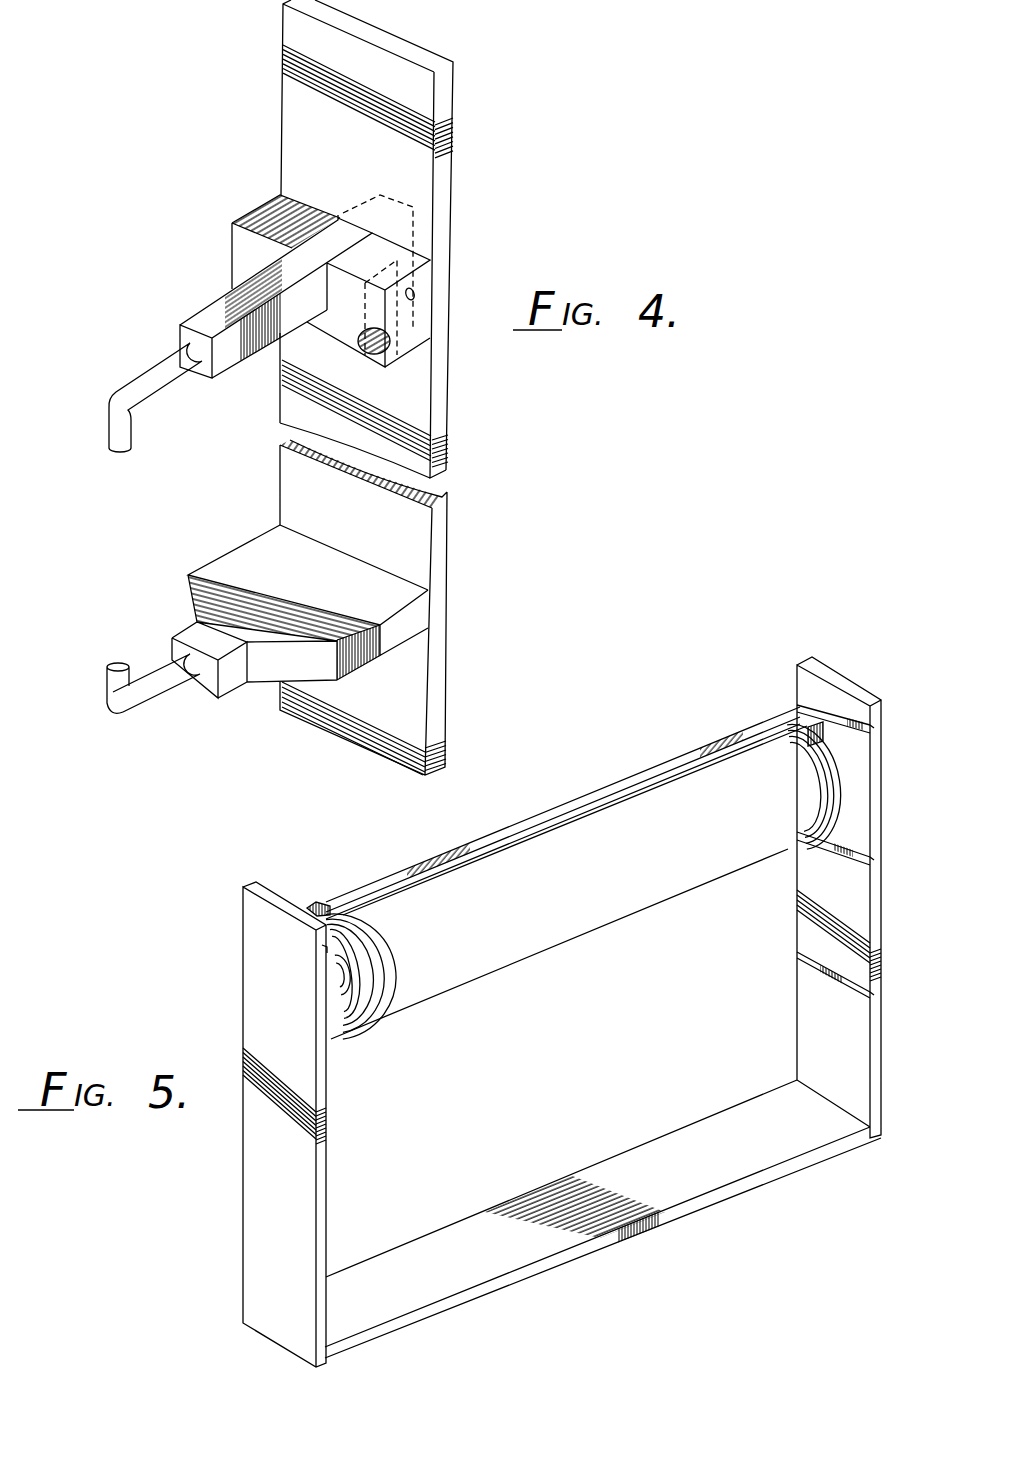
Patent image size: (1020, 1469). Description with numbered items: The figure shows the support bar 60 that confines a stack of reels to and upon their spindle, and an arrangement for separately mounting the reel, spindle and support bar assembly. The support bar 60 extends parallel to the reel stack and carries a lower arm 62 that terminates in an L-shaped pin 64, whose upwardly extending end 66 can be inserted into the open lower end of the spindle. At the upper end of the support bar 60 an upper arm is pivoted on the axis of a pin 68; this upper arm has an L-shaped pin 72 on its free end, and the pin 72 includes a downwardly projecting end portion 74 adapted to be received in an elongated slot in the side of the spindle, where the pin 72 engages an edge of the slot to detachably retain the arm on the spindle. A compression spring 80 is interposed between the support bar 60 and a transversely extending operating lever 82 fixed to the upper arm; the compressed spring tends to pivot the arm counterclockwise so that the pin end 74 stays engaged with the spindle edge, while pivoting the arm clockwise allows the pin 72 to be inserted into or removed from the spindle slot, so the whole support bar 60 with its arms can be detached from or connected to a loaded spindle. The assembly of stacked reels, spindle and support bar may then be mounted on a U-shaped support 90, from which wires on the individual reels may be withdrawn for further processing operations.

In FIG. 4, the support bar 60 is at (447, 478).
In FIG. 5, the support bar 60 is at (543, 817).
In FIG. 4, the lower arm 62 is at (256, 543).
In FIG. 5, the lower arm 62 is at (823, 738).
In FIG. 4, the L-shaped pin 64 is at (157, 707).
In FIG. 4, the upwardly extending end 66 is at (106, 684).
In FIG. 4, the pin 68 is at (416, 292).
In FIG. 4, the L-shaped pin 72 is at (150, 371).
In FIG. 4, the downwardly projecting end portion 74 is at (109, 436).
In FIG. 4, the compression spring 80 is at (360, 351).
In FIG. 4, the operating lever 82 is at (413, 330).
In FIG. 5, the operating lever 82 is at (319, 902).
In FIG. 5, the U-shaped support 90 is at (236, 982).